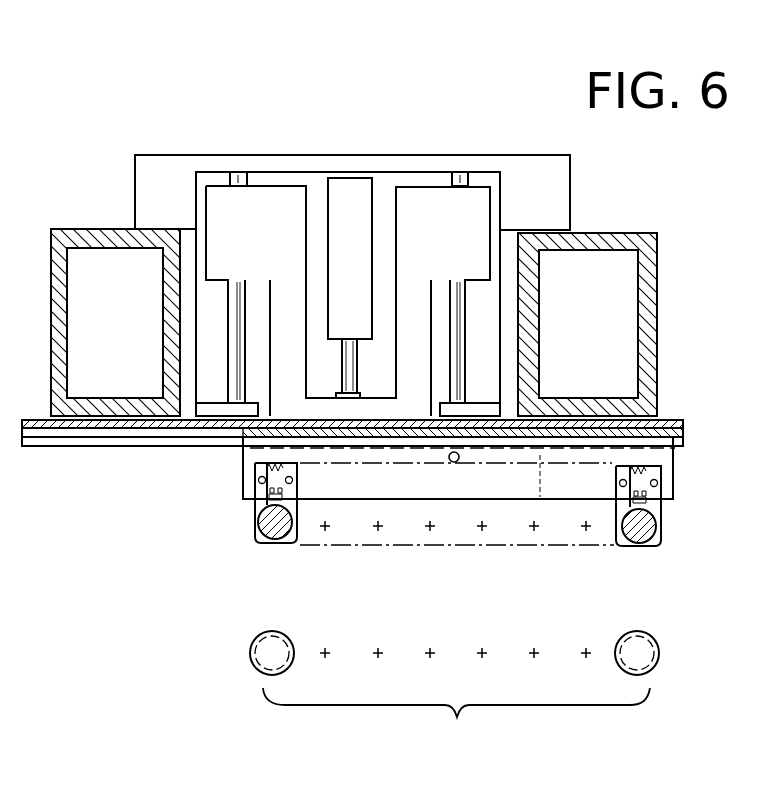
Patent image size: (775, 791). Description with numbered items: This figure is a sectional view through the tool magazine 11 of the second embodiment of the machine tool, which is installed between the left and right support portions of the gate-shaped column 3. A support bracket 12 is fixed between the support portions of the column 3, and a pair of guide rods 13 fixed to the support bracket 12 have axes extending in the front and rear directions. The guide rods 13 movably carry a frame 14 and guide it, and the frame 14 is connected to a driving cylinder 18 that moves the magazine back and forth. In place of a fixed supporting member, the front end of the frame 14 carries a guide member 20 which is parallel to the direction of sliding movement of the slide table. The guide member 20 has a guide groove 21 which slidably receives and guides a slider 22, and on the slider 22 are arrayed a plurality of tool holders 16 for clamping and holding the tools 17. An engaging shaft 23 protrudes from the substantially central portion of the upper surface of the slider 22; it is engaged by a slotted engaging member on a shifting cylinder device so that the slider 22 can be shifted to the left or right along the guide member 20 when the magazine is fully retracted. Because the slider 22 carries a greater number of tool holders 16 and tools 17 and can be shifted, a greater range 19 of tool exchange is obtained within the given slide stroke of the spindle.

The column 3 is at (657, 283).
The tool magazine 11 is at (259, 568).
The support bracket 12 is at (557, 192).
The guide rods 13 is at (233, 302).
The frame 14 is at (272, 352).
The tool holders 16 is at (662, 530).
The tools 17 is at (641, 540).
The driving cylinder 18 is at (347, 186).
The range of exchange of tool 19 is at (454, 692).
The guide member 20 is at (683, 426).
The guide groove 21 is at (683, 440).
The slider 22 is at (673, 480).
The engaging shaft 23 is at (454, 463).